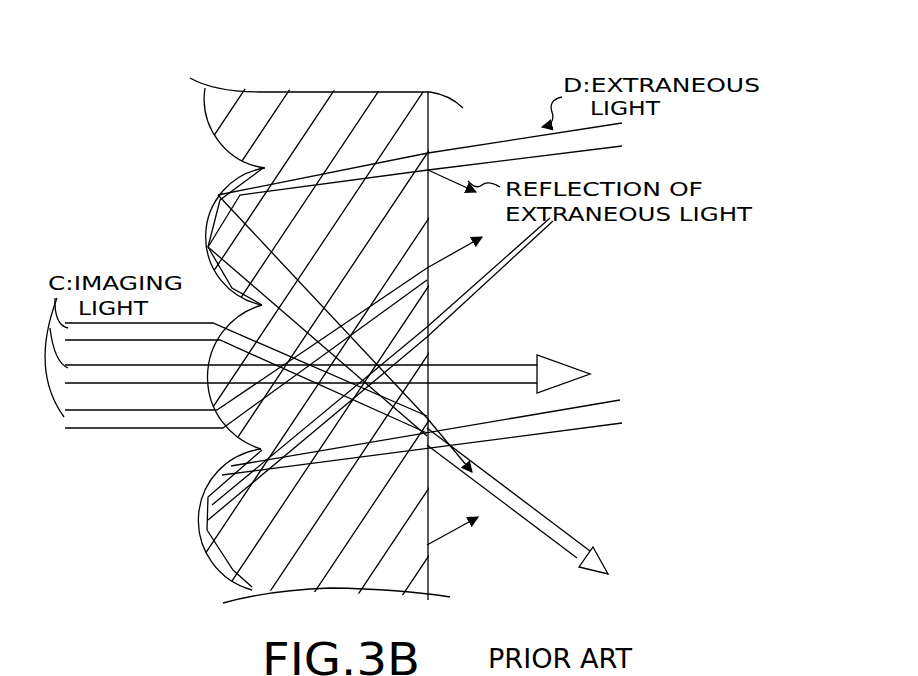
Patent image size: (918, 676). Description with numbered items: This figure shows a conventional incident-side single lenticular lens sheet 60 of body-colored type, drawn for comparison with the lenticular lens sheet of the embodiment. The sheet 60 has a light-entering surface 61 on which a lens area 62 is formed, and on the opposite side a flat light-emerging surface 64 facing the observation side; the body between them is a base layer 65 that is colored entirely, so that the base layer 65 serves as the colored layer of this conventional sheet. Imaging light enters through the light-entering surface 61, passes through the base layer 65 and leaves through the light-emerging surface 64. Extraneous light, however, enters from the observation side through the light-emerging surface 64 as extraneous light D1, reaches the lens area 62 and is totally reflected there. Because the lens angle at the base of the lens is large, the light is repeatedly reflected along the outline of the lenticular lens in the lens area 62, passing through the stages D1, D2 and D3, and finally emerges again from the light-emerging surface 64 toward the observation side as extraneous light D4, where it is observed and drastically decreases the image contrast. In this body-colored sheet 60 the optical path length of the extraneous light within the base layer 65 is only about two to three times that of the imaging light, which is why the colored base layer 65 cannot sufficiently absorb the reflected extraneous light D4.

The incident-side single lenticular lens sheet 60 is at (473, 66).
The light-entering surface 61 is at (213, 556).
The lens area 62 is at (209, 500).
The light-emerging surface 64 is at (433, 572).
The base layer 65 is at (252, 556).
The extraneous light D1 is at (489, 145).
The extraneous light D2 is at (218, 200).
The extraneous light D3 is at (209, 251).
The extraneous light D4 is at (441, 254).